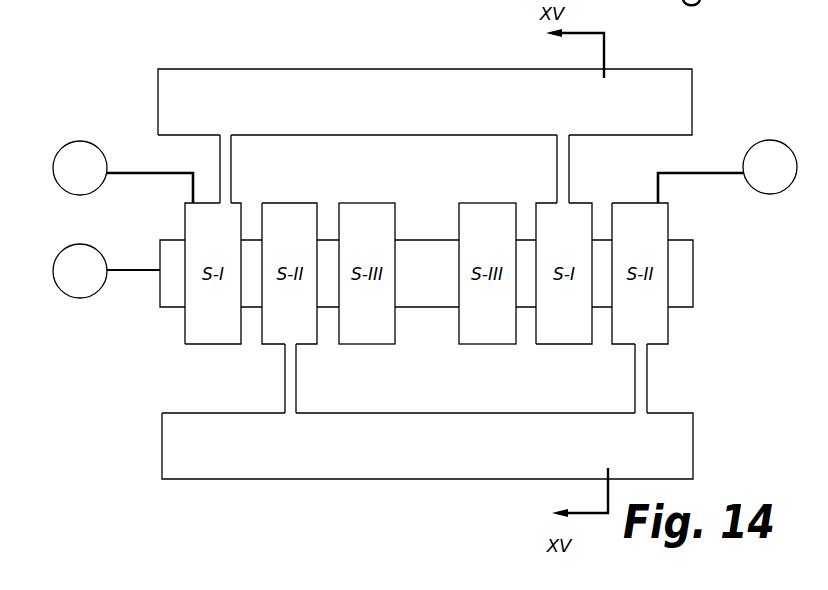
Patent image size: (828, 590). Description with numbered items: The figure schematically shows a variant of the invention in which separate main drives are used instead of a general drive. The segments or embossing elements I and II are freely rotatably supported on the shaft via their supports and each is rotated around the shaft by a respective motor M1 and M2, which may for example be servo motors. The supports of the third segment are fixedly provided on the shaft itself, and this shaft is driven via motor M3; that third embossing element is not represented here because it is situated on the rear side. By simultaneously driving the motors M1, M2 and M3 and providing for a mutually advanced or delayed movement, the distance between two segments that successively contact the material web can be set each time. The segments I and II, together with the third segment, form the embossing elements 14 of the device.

The embossing elements 14 is at (468, 265).
The segment I is at (425, 102).
The segment II is at (427, 446).
The motor M1 is at (123, 172).
The motor M2 is at (727, 171).
The motor M3 is at (106, 271).